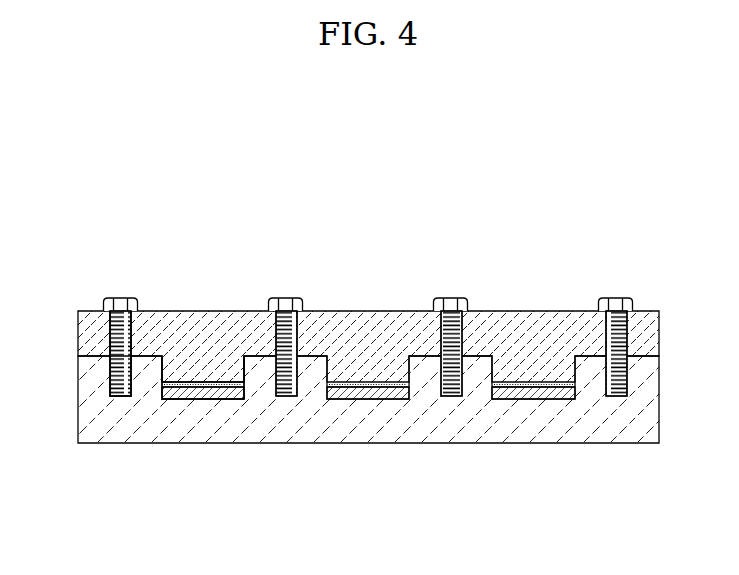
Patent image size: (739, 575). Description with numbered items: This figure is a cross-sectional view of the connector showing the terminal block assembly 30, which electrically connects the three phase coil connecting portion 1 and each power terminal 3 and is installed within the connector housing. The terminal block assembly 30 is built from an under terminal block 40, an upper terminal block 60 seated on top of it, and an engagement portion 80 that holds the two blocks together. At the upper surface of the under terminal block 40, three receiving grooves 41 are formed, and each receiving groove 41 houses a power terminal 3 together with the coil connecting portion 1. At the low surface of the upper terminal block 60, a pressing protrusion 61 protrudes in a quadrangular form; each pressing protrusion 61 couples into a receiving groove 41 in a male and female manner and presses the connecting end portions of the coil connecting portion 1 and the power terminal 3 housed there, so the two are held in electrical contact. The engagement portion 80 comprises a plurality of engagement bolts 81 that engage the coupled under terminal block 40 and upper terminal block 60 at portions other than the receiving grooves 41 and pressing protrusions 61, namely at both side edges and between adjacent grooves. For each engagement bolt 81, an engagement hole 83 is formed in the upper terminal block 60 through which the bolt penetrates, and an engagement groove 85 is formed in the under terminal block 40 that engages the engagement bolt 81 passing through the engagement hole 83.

The terminal block assembly 30 is at (361, 126).
The under terminal block 40 is at (362, 452).
The upper terminal block 60 is at (368, 307).
The pressing protrusion 61 is at (165, 371).
The coil connecting portion 1 is at (174, 396).
The power terminal 3 is at (202, 394).
The receiving groove 41 is at (236, 399).
The engagement portion 80 is at (334, 305).
The engagement bolt 81 is at (113, 302).
The engagement hole 83 is at (113, 331).
The engagement groove 85 is at (113, 374).